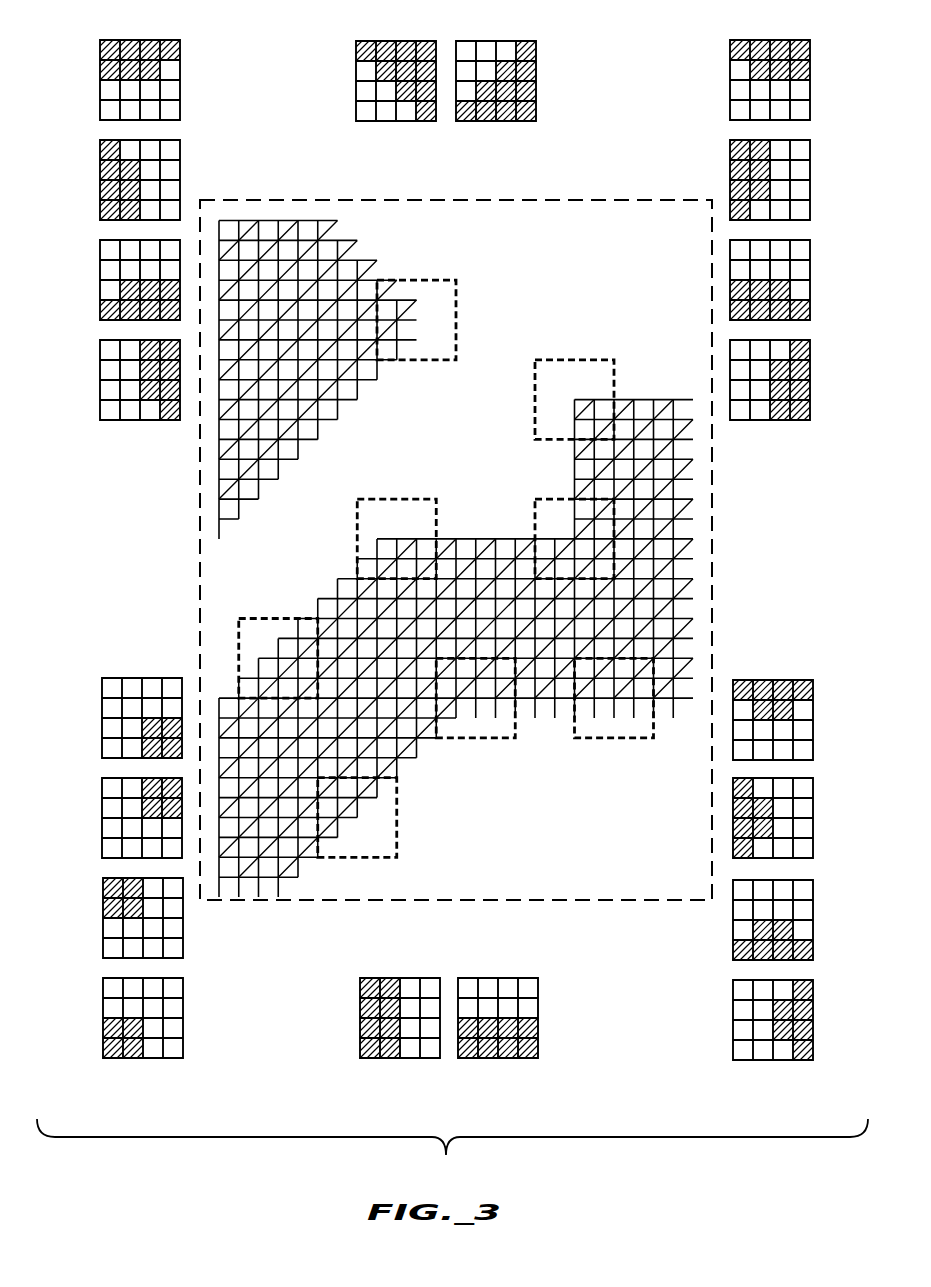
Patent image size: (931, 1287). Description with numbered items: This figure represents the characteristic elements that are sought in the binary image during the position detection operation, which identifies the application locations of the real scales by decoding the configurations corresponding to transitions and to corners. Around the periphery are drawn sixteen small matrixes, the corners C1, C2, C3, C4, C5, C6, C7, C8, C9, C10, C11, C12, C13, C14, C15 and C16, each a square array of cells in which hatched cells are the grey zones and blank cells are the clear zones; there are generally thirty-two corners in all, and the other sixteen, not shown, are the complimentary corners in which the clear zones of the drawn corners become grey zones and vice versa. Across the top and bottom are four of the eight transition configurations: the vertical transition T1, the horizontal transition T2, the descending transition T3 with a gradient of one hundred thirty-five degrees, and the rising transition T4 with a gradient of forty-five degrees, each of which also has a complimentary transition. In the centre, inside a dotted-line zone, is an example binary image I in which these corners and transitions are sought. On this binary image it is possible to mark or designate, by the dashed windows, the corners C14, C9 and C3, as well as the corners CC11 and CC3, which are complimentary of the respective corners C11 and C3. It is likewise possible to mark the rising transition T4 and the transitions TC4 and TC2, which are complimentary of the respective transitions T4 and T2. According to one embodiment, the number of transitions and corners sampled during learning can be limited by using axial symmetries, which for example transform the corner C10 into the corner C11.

The binary image I is at (598, 912).
The corner matrix C1 is at (116, 80).
The corner matrix C2 is at (116, 180).
The corner matrix C3 is at (402, 440).
The corner matrix C4 is at (116, 380).
The corner matrix C5 is at (794, 80).
The corner matrix C6 is at (794, 180).
The corner matrix C7 is at (794, 280).
The corner matrix C8 is at (794, 380).
The corner matrix C9 is at (627, 325).
The corner matrix C10 is at (115, 818).
The corner matrix C11 is at (115, 918).
The corner matrix C12 is at (115, 1018).
The corner matrix C13 is at (802, 720).
The corner matrix C14 is at (464, 244).
The corner matrix C15 is at (802, 920).
The corner matrix C16 is at (802, 1020).
The vertical transition T1 is at (400, 998).
The horizontal transition T2 is at (498, 998).
The descending transition T3 is at (396, 60).
The rising transition T4 is at (282, 617).
The complimentary corner CC11 is at (545, 498).
The complimentary corner CC3 is at (483, 739).
The complimentary transition TC2 is at (610, 739).
The complimentary transition TC4 is at (399, 830).